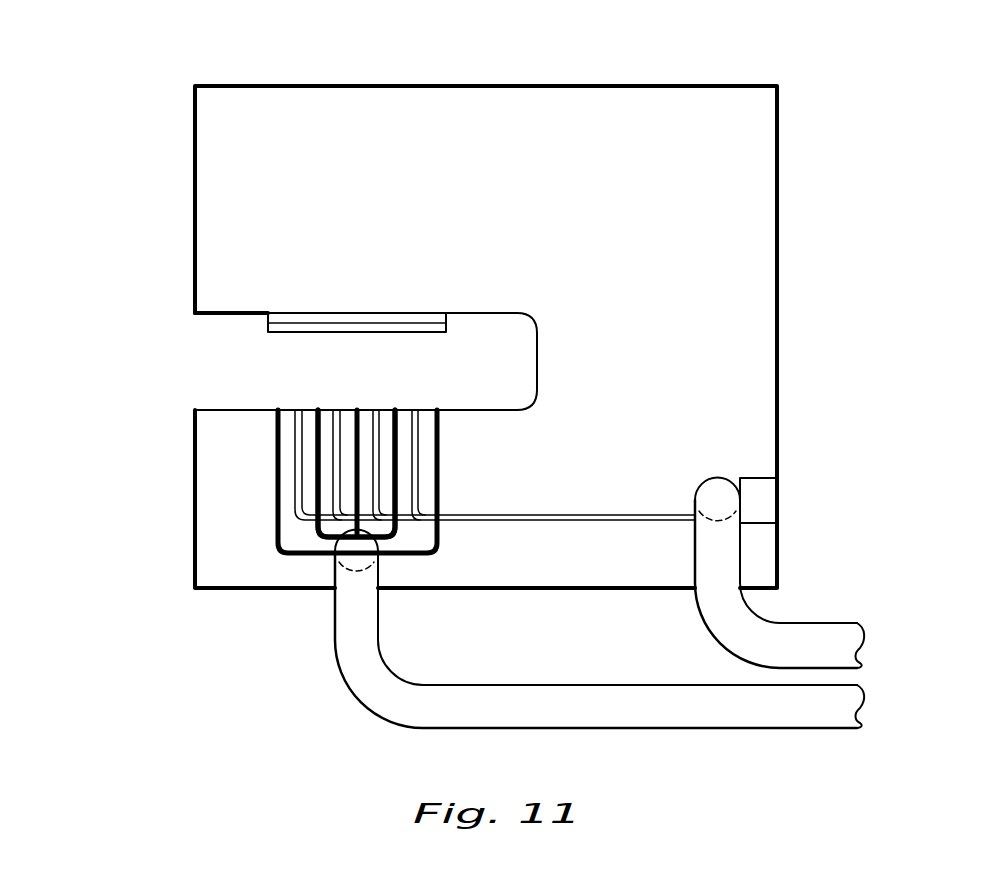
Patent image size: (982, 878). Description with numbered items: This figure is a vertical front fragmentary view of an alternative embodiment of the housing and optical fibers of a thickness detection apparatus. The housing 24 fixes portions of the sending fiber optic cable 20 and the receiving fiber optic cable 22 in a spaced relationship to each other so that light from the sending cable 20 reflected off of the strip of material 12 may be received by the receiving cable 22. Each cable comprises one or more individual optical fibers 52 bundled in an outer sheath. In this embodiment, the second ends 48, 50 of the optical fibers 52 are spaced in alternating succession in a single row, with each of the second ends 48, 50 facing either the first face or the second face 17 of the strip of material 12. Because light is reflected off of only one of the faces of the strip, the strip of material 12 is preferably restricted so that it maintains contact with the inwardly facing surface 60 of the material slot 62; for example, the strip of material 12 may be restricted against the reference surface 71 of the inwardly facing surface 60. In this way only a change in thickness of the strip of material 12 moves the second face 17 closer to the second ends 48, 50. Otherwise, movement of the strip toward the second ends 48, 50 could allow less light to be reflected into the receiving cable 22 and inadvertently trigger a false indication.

The strip of material 12 is at (326, 317).
The second face 17 is at (300, 340).
The sending fiber optic cable 20 is at (813, 633).
The receiving fiber optic cable 22 is at (742, 706).
The housing 24 is at (443, 122).
The second end 48 is at (415, 410).
The second end 50 is at (396, 410).
The optical fibers 52 is at (438, 455).
The inwardly facing surface 60 is at (213, 313).
The material slot 62 is at (200, 369).
The reference surface 71 is at (213, 313).